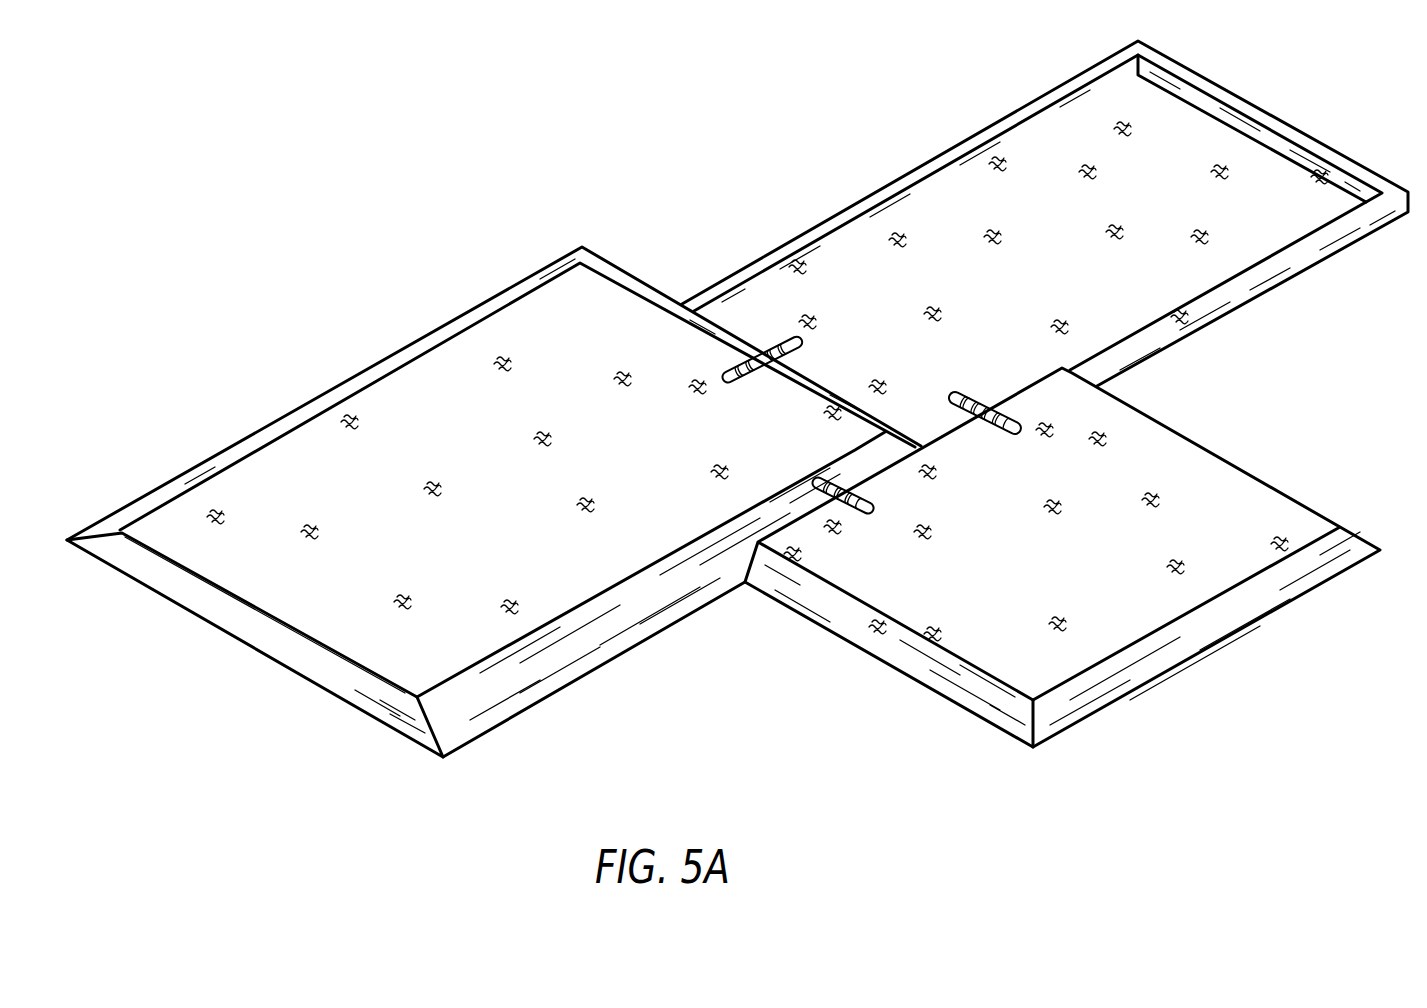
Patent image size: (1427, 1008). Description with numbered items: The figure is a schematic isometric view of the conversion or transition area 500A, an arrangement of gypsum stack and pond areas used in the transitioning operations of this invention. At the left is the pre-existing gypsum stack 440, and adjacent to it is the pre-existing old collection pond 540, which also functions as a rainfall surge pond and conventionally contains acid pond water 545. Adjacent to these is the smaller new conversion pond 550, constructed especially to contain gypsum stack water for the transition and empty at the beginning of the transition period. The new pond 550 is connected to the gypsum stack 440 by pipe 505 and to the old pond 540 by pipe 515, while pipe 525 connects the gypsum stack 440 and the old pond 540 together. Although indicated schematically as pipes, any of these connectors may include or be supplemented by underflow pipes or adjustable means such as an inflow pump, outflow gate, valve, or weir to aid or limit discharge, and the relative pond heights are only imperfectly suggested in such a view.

The conversion or transition area 500A is at (576, 199).
The gypsum stack 440 is at (267, 433).
The old pond 540 is at (936, 160).
The acid pond water 545 is at (1067, 281).
The new pond 550 is at (1262, 480).
The pipe 525 is at (800, 342).
The pipe 515 is at (957, 397).
The pipe 505 is at (866, 508).